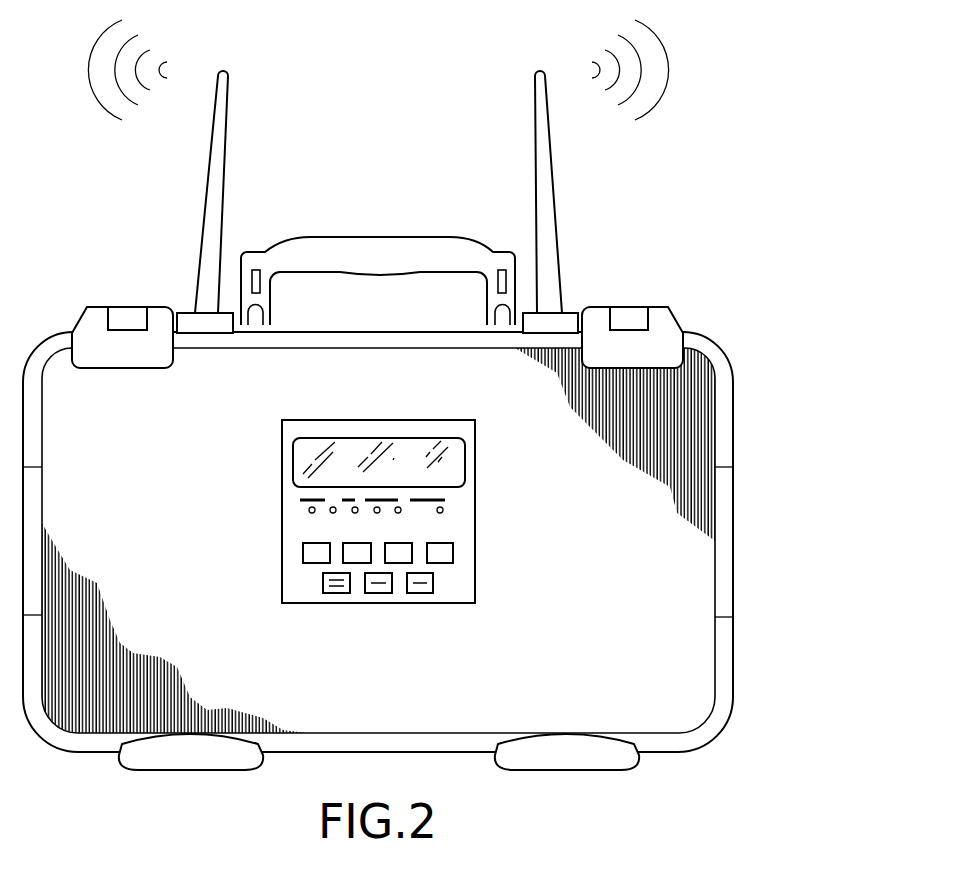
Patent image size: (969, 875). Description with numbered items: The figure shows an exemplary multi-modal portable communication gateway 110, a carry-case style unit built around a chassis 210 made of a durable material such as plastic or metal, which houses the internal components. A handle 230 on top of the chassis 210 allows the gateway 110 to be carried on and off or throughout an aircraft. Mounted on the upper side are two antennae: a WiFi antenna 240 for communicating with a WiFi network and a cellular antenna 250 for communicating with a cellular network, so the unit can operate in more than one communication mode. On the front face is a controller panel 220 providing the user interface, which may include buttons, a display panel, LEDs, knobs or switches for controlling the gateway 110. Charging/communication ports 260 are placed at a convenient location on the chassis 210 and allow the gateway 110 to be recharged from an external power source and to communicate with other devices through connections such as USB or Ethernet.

The multi-modal portable communication gateway 110 is at (798, 160).
The chassis 210 is at (720, 393).
The controller panel 220 is at (473, 468).
The handle 230 is at (377, 235).
The WiFi antenna 240 is at (225, 173).
The cellular antenna 250 is at (557, 215).
The charging/communication ports 260 is at (732, 537).